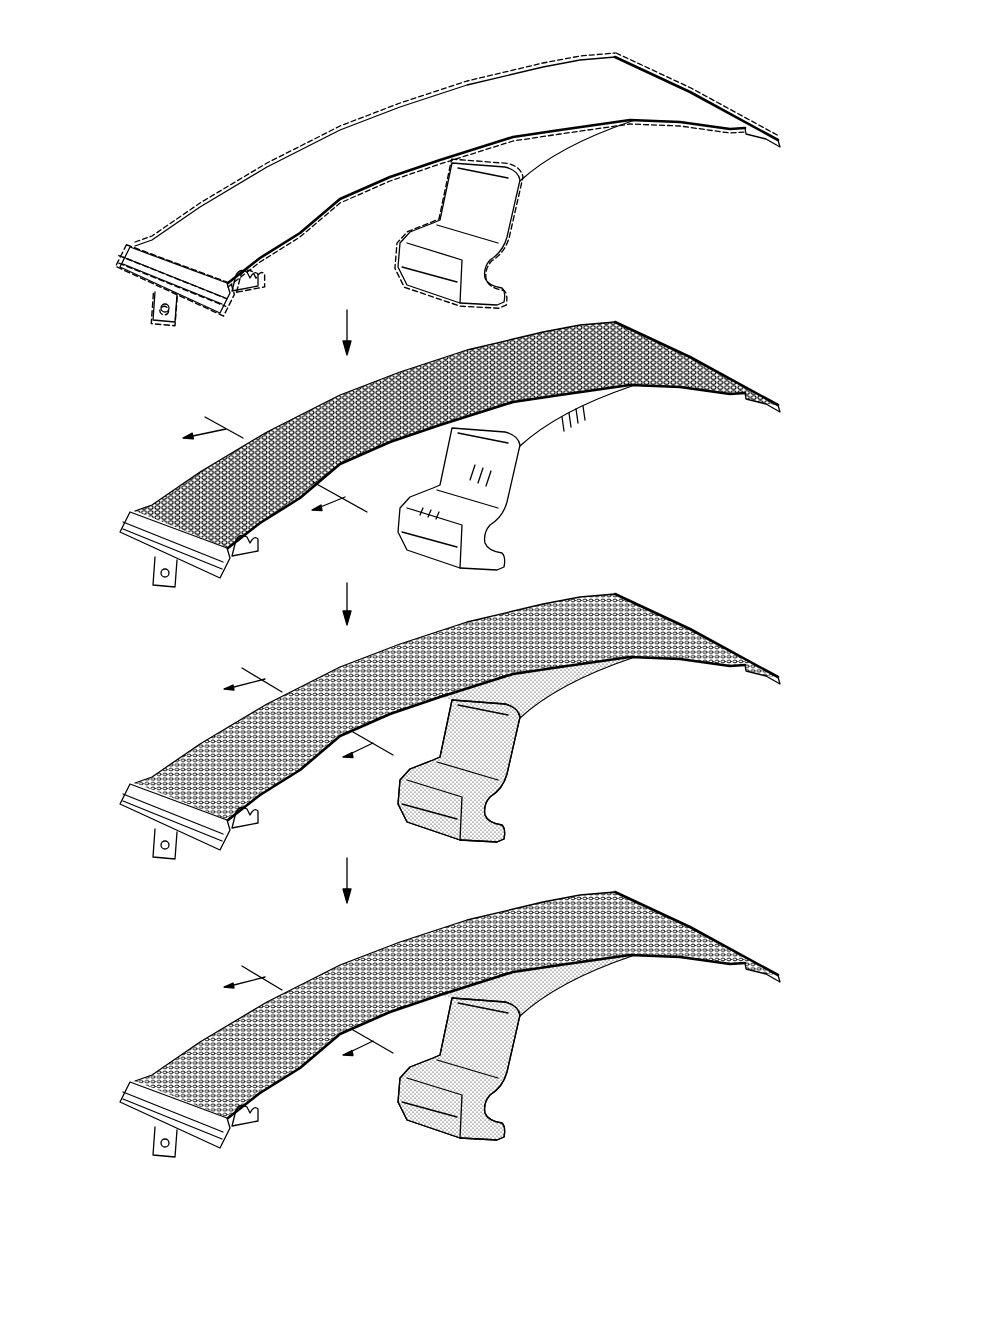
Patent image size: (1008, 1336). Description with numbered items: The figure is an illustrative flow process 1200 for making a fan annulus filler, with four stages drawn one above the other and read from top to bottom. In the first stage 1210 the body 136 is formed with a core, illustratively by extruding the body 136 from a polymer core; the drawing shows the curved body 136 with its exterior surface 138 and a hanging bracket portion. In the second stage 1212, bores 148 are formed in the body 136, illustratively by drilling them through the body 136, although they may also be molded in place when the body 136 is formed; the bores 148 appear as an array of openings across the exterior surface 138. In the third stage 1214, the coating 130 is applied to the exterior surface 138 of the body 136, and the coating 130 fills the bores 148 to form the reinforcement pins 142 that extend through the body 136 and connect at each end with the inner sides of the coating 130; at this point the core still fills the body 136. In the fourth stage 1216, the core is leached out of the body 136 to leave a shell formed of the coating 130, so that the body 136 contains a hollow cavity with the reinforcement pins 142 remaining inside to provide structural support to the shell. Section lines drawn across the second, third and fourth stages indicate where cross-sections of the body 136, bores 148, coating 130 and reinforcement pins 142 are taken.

The flow process 1200 is at (116, 140).
The body 136 is at (467, 104).
The exterior surface 138 is at (542, 80).
The stage of forming the body 1210 is at (772, 103).
The bores 148 is at (548, 330).
The stage of forming bores 1212 is at (763, 345).
The reinforcement pins 142 is at (548, 600).
The stage of coating the body 1214 is at (750, 614).
The coating 130 is at (538, 694).
The stage of leaching out the core 1216 is at (746, 902).